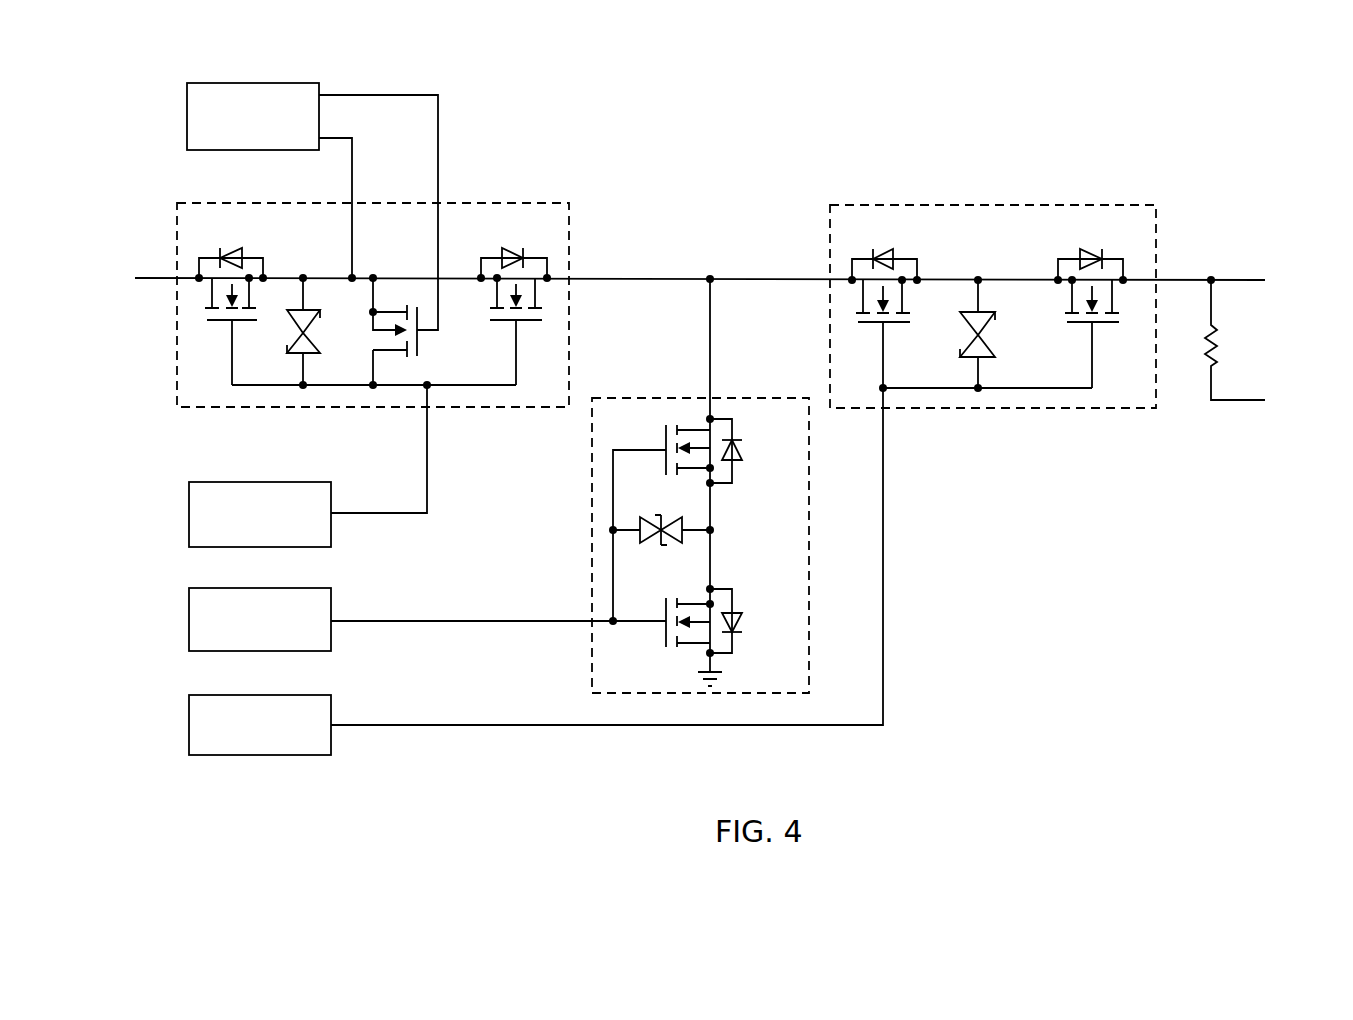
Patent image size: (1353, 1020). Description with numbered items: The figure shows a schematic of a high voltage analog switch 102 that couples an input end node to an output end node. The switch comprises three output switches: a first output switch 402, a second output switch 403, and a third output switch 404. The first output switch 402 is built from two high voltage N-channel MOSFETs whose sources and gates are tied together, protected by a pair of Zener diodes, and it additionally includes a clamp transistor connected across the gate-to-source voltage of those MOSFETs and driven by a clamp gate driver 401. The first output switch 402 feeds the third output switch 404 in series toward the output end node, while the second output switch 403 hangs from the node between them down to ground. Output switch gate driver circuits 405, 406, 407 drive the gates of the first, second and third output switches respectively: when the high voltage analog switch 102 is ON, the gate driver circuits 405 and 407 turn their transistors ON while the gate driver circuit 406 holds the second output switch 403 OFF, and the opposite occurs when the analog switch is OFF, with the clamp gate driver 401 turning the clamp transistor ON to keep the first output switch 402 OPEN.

The high voltage analog switch 102 is at (1193, 131).
The clamp gate driver 401 is at (250, 83).
The output switch SWA 402 is at (569, 227).
The output switch SWB 403 is at (592, 530).
The output switch SWC 404 is at (1040, 205).
The output switch gate driver circuit 405 is at (205, 482).
The output switch gate driver circuit 406 is at (205, 588).
The output switch gate driver circuit 407 is at (205, 695).